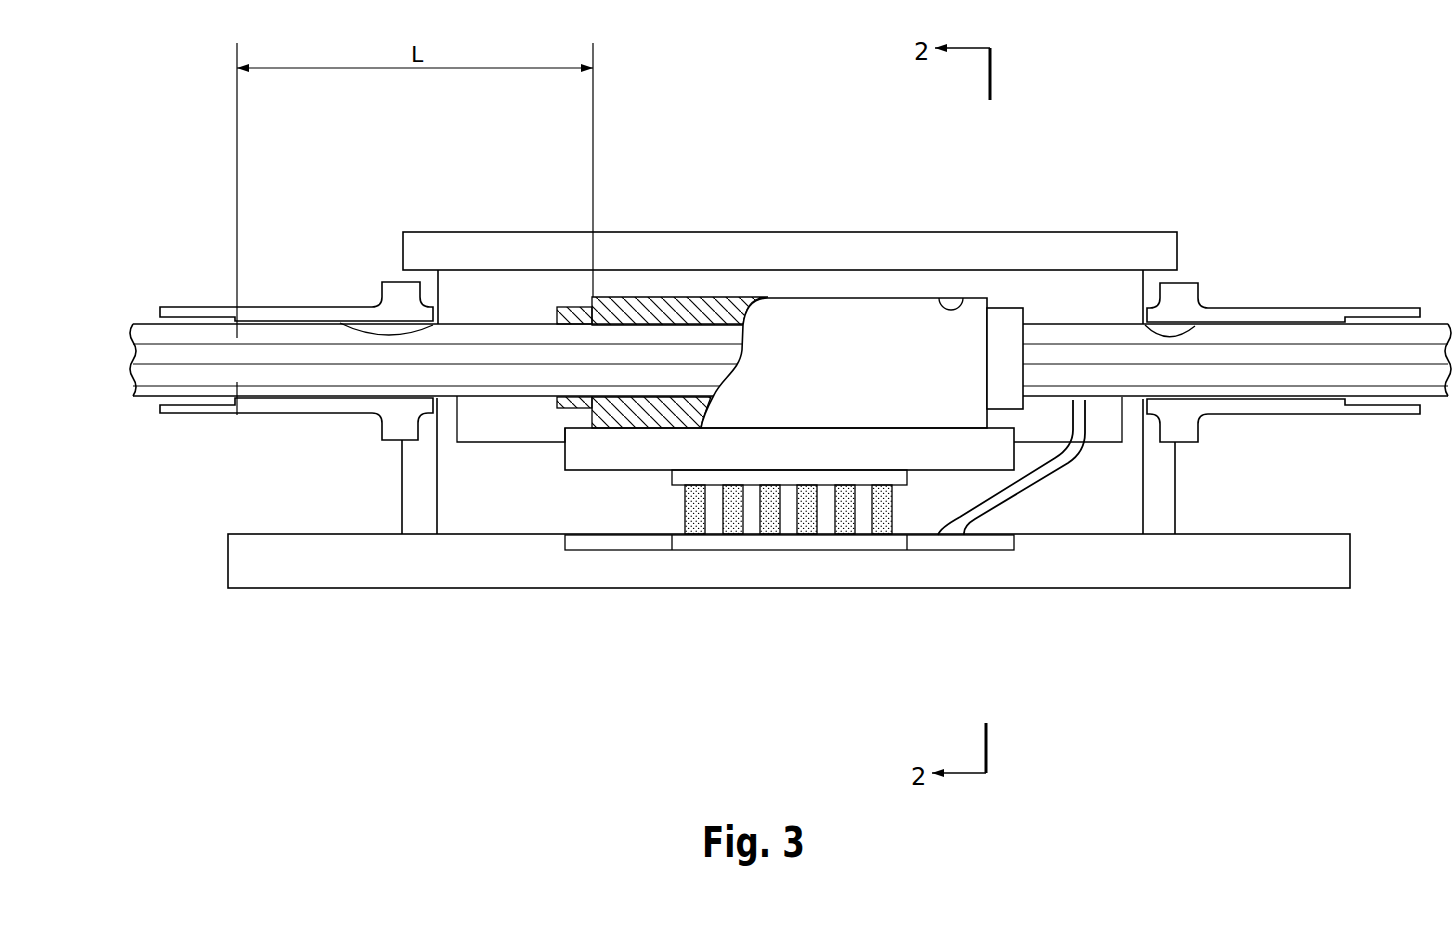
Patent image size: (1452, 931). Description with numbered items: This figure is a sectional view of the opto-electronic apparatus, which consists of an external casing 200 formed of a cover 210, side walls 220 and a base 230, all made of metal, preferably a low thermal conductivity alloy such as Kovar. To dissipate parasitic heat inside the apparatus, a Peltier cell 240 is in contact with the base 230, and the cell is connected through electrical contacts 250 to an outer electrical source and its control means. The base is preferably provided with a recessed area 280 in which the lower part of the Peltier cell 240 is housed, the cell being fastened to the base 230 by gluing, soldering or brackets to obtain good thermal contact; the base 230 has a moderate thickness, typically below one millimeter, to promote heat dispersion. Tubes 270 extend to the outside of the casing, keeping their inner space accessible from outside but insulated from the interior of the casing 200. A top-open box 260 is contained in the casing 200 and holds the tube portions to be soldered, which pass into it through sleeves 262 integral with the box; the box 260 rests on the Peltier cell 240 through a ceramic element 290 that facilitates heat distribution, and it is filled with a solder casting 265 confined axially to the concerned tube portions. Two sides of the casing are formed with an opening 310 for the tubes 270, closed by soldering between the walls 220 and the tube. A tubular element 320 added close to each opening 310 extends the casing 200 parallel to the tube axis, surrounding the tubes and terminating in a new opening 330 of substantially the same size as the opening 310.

The external casing 200 is at (425, 232).
The cover 210 is at (815, 248).
The side walls 220 is at (407, 498).
The base 230 is at (475, 577).
The Peltier cell 240 is at (807, 523).
The electrical contacts 250 is at (997, 505).
The top-open box 260 is at (963, 300).
The sleeves 262 is at (557, 307).
The solder casting 265 is at (665, 297).
The tubes 270 is at (260, 335).
The recessed area 280 is at (630, 545).
The ceramic element 290 is at (585, 458).
The opening 310 is at (352, 326).
The tubular element 320 is at (195, 415).
The new opening 330 is at (162, 320).